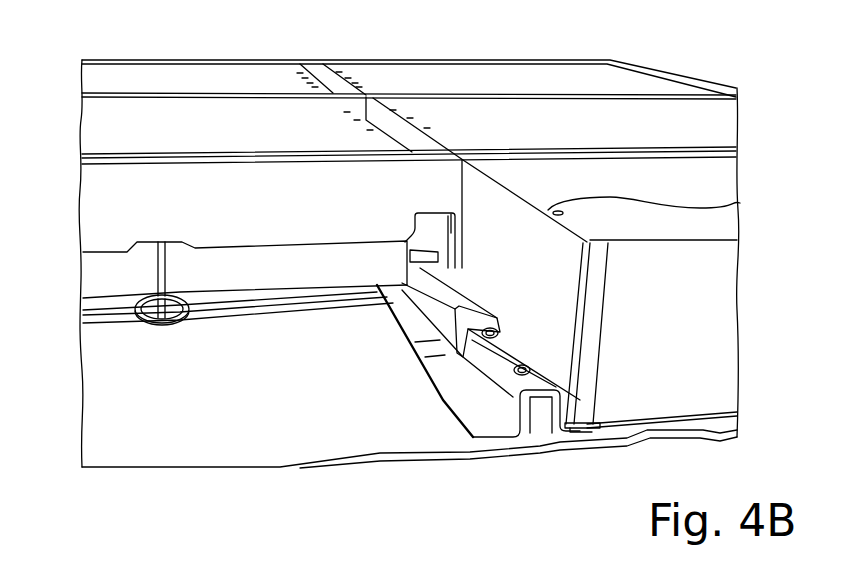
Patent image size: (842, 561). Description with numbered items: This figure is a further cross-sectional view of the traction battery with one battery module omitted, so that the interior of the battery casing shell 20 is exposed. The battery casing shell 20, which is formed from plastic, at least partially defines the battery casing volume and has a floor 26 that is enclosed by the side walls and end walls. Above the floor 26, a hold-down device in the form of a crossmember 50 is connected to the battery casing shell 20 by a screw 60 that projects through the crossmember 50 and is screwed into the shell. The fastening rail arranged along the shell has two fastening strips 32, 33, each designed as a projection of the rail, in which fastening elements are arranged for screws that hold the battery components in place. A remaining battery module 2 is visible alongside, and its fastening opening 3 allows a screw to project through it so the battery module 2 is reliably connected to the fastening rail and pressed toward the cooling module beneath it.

The battery module 2 is at (102, 76).
The fastening opening 3 is at (741, 199).
The battery casing shell 20 is at (106, 441).
The floor 26 is at (277, 433).
The fastening strip 32 is at (495, 427).
The fastening strip 33 is at (580, 426).
The crossmember 50 is at (130, 217).
The screw 60 is at (490, 337).